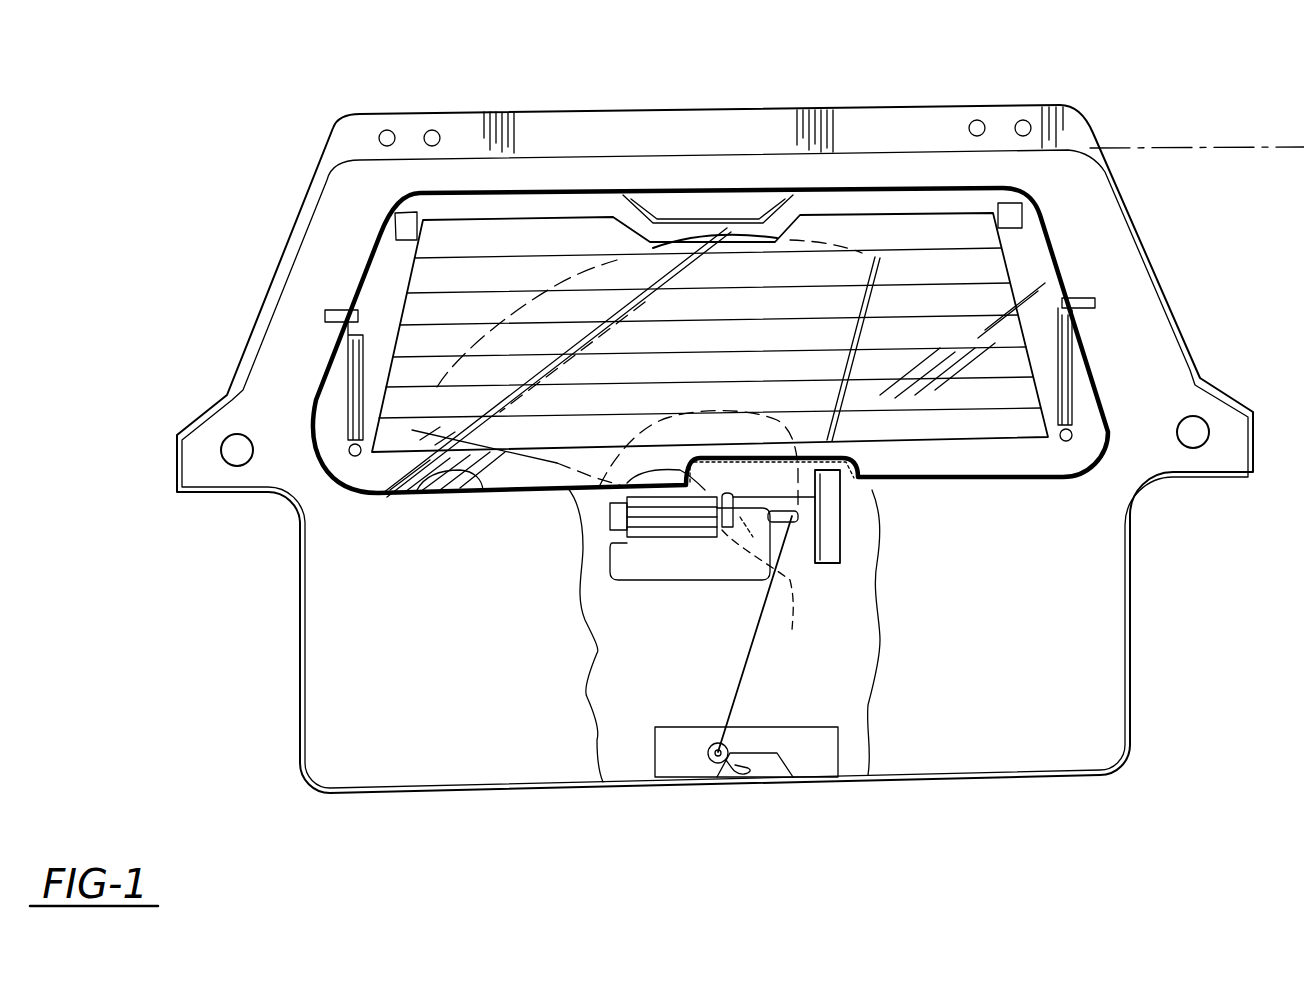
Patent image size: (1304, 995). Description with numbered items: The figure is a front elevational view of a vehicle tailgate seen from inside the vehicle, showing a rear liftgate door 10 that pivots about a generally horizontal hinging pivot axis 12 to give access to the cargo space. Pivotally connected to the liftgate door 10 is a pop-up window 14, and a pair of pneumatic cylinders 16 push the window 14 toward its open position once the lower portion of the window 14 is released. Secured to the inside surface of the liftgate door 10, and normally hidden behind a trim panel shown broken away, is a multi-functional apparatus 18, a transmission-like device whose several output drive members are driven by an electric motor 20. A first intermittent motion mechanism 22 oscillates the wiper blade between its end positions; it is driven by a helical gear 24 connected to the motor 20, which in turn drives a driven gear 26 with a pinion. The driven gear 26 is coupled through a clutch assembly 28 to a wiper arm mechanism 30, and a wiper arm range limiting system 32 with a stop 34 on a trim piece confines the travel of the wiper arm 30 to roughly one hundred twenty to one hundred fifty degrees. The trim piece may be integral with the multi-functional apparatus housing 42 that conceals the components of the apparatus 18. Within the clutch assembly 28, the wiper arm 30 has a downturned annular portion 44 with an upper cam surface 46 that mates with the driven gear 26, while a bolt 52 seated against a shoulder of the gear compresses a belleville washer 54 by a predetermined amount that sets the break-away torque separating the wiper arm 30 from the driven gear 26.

The rear liftgate door 10 is at (335, 658).
The hinging pivot axis 12 is at (1276, 147).
The pop-up window 14 is at (992, 270).
The pneumatic cylinders 16 is at (1070, 407).
The multi-functional apparatus 18 is at (690, 569).
The electric motor 20 is at (580, 560).
The first intermittent motion mechanism 22 is at (796, 628).
The helical gear 24 is at (845, 490).
The driven gear 26 is at (870, 298).
The clutch assembly 28 is at (583, 493).
The wiper arm mechanism 30 is at (827, 515).
The wiper arm range limiting system 32 is at (862, 545).
The stop 34 is at (705, 782).
The multi-functional apparatus housing 42 is at (425, 460).
The downturned annular portion 44 is at (1072, 353).
The upper cam surface 46 is at (415, 490).
The bolt 52 is at (742, 487).
The belleville washer 54 is at (793, 490).